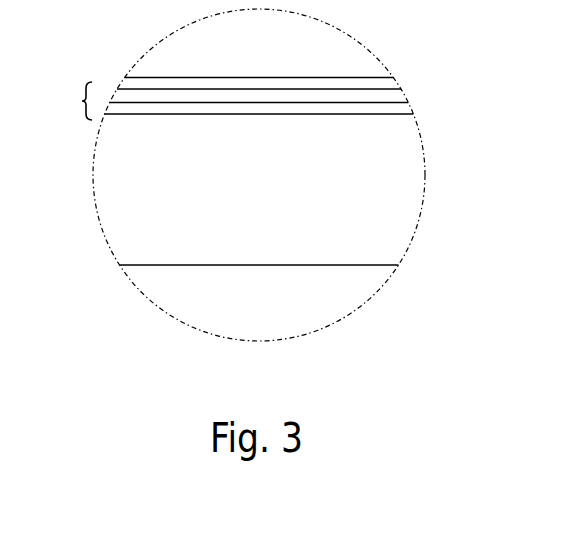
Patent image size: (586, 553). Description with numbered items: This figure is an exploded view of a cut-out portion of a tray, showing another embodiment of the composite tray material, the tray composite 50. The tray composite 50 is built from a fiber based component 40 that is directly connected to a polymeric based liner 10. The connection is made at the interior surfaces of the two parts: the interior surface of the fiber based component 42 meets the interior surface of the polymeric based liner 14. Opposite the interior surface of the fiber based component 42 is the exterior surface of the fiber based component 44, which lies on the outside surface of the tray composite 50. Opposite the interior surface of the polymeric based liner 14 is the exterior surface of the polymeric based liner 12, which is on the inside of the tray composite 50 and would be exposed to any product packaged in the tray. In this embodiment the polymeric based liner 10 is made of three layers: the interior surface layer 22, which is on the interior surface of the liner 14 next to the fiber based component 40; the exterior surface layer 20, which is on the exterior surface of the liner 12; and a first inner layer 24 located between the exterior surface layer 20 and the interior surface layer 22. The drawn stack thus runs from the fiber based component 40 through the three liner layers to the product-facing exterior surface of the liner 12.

The polymeric based liner 10 is at (274, 100).
The exterior surface of the polymeric based liner 12 is at (382, 76).
The interior surface of the polymeric based liner 14 is at (380, 116).
The exterior surface layer of the liner 20 is at (192, 84).
The interior surface layer of the liner 22 is at (244, 107).
The first inner layer 24 is at (224, 95).
The fiber based component 40 is at (413, 212).
The interior surface of the fiber based component 42 is at (406, 105).
The exterior surface of the fiber based component 44 is at (148, 270).
The tray composite 50 is at (387, 342).